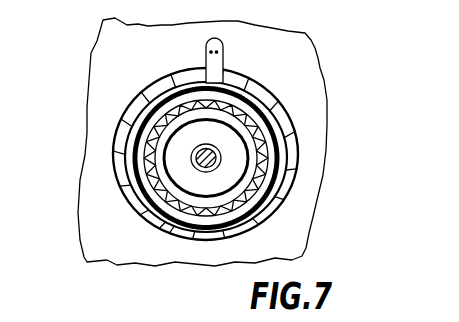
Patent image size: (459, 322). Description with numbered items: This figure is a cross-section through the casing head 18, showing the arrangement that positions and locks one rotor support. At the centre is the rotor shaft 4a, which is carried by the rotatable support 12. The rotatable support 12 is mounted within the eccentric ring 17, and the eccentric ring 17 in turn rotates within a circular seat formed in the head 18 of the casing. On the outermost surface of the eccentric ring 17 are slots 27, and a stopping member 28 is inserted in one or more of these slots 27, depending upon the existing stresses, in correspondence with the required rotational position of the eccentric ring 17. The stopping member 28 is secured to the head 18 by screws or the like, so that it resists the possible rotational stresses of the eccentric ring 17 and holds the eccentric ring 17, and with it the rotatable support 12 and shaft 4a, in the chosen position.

The head 18 is at (303, 63).
The eccentric ring 17 is at (121, 160).
The slots 27 is at (172, 78).
The rotatable support 12 is at (170, 221).
The shaft 4a is at (181, 158).
The stopping member 28 is at (219, 62).